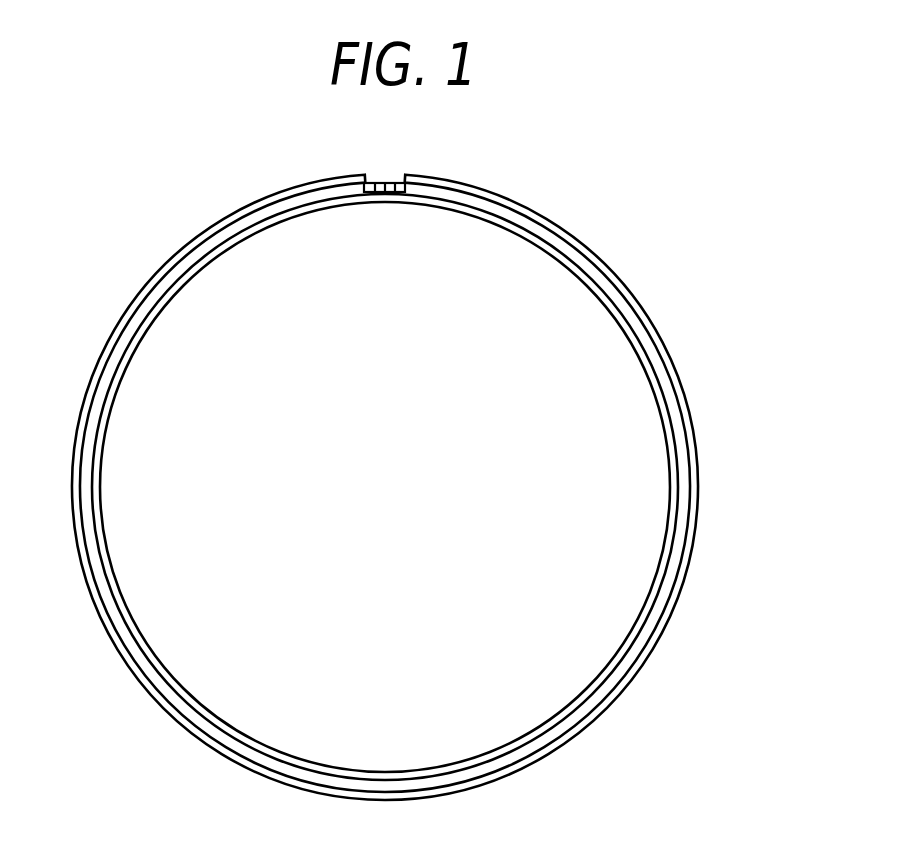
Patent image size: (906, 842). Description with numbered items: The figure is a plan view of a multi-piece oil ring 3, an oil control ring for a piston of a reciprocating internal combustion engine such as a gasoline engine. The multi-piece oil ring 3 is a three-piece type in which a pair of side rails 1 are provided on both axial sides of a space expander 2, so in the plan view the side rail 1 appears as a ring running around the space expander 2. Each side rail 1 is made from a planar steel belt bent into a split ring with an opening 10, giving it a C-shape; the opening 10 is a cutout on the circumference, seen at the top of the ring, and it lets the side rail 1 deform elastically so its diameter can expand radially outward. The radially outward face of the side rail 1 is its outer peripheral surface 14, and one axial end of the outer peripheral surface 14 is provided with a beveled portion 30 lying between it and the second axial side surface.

The side rail 1 is at (632, 280).
The space expander 2 is at (496, 236).
The multi-piece oil ring 3 is at (526, 167).
The opening 10 is at (386, 171).
The outer peripheral surface 14 is at (560, 214).
The beveled portion 30 is at (675, 358).